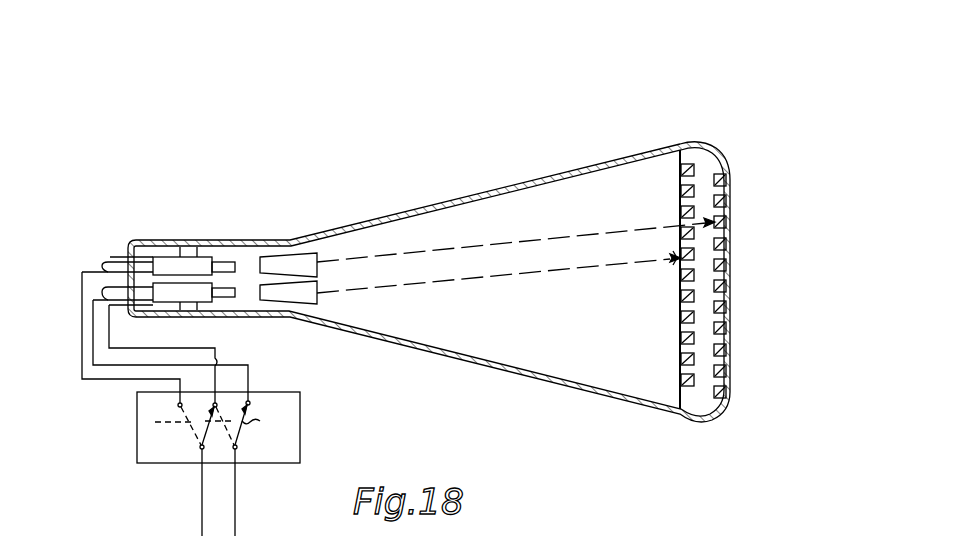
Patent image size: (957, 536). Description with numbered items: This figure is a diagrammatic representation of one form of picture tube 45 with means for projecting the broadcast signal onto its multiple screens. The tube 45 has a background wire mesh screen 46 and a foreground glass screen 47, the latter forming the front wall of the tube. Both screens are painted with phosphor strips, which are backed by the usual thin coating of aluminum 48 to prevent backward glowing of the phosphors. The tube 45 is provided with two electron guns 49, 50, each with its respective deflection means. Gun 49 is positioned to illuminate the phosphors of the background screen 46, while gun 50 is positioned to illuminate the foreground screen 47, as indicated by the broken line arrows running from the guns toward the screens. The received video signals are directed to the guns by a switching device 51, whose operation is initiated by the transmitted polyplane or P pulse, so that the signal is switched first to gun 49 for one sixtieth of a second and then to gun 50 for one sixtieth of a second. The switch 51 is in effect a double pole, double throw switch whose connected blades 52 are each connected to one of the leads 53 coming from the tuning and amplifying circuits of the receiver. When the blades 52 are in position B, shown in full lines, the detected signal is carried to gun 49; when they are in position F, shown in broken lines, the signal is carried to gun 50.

The picture tube 45 is at (374, 225).
The background wire mesh screen 46 is at (680, 177).
The foreground glass screen 47 is at (730, 191).
The thin coating of aluminum 48 is at (680, 205).
The electron gun 49 is at (202, 297).
The electron gun 50 is at (195, 262).
The switching device 51 is at (300, 421).
The connected blades 52 is at (240, 437).
The leads 53 is at (202, 511).